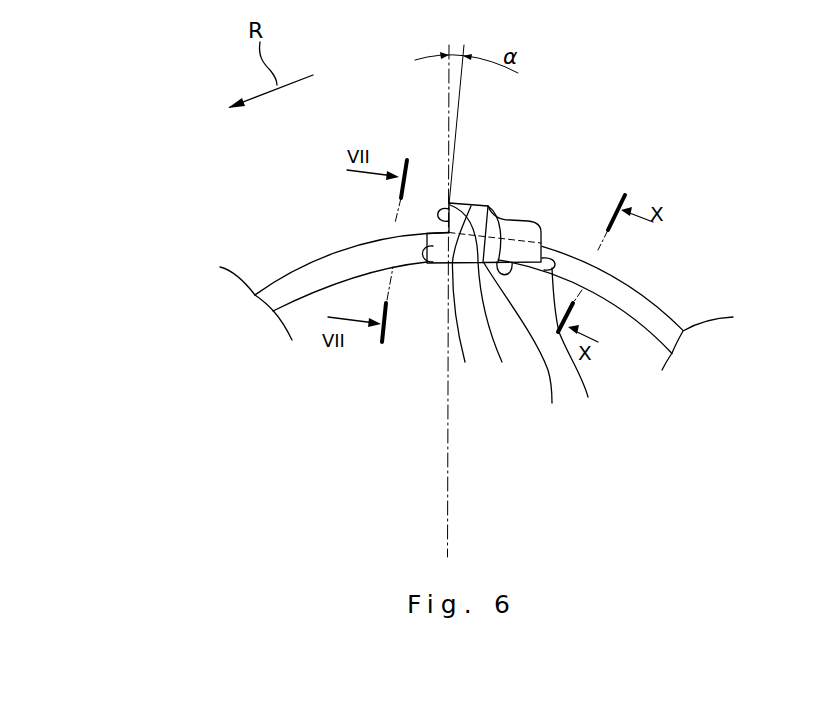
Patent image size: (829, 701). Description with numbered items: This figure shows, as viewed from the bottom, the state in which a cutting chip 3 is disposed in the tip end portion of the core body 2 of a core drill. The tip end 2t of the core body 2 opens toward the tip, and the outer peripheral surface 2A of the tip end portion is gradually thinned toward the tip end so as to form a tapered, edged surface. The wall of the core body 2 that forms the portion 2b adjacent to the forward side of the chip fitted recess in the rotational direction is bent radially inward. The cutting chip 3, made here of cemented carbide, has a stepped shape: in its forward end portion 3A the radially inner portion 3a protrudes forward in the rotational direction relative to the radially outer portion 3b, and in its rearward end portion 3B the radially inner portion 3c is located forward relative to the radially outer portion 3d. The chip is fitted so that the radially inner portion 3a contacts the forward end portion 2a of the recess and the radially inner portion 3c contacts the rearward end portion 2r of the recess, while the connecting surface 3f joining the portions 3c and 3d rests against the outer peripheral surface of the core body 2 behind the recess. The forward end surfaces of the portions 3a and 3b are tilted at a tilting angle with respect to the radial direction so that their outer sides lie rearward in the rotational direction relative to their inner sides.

The core body 2 is at (636, 284).
The outer peripheral surface 2A is at (297, 280).
The forward end portion of the recess 2a is at (425, 263).
The portion adjacent to a forward portion of the recess 2b is at (410, 251).
The rearward end portion of the recess 2r is at (488, 205).
The tip end 2t is at (629, 318).
The cutting chip 3 is at (520, 288).
The forward end portion 3A is at (477, 319).
The rearward end portion 3B is at (531, 325).
The radially inner portion of the forward end portion 3a is at (466, 299).
The radially outer portion of the forward end portion 3b is at (450, 383).
The radially inner portion of the rearward end portion 3c is at (526, 350).
The radially outer portion of the rearward end portion 3d is at (578, 352).
The connecting surface 3f is at (512, 262).